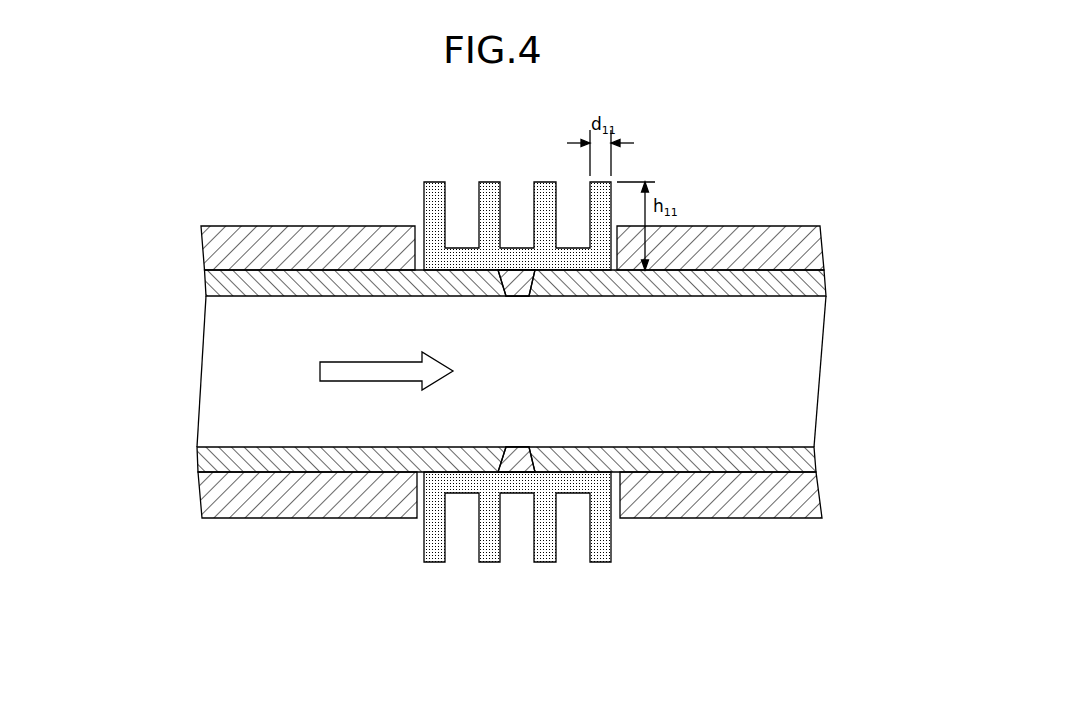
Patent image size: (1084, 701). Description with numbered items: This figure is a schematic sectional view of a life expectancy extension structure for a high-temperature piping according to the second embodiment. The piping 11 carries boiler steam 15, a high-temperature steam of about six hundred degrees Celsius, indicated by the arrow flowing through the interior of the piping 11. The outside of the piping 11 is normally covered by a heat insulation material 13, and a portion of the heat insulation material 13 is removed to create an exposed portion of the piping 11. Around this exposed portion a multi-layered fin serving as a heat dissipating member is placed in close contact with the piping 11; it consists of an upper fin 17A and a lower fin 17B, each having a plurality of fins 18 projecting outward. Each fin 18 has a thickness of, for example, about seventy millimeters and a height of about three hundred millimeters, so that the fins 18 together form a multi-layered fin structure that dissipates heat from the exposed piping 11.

The piping 11 is at (745, 278).
The heat insulation material 13 is at (300, 226).
The boiler steam 15 is at (366, 382).
The upper fin 17A is at (411, 181).
The lower fin 17B is at (576, 578).
The fin 18 is at (499, 383).